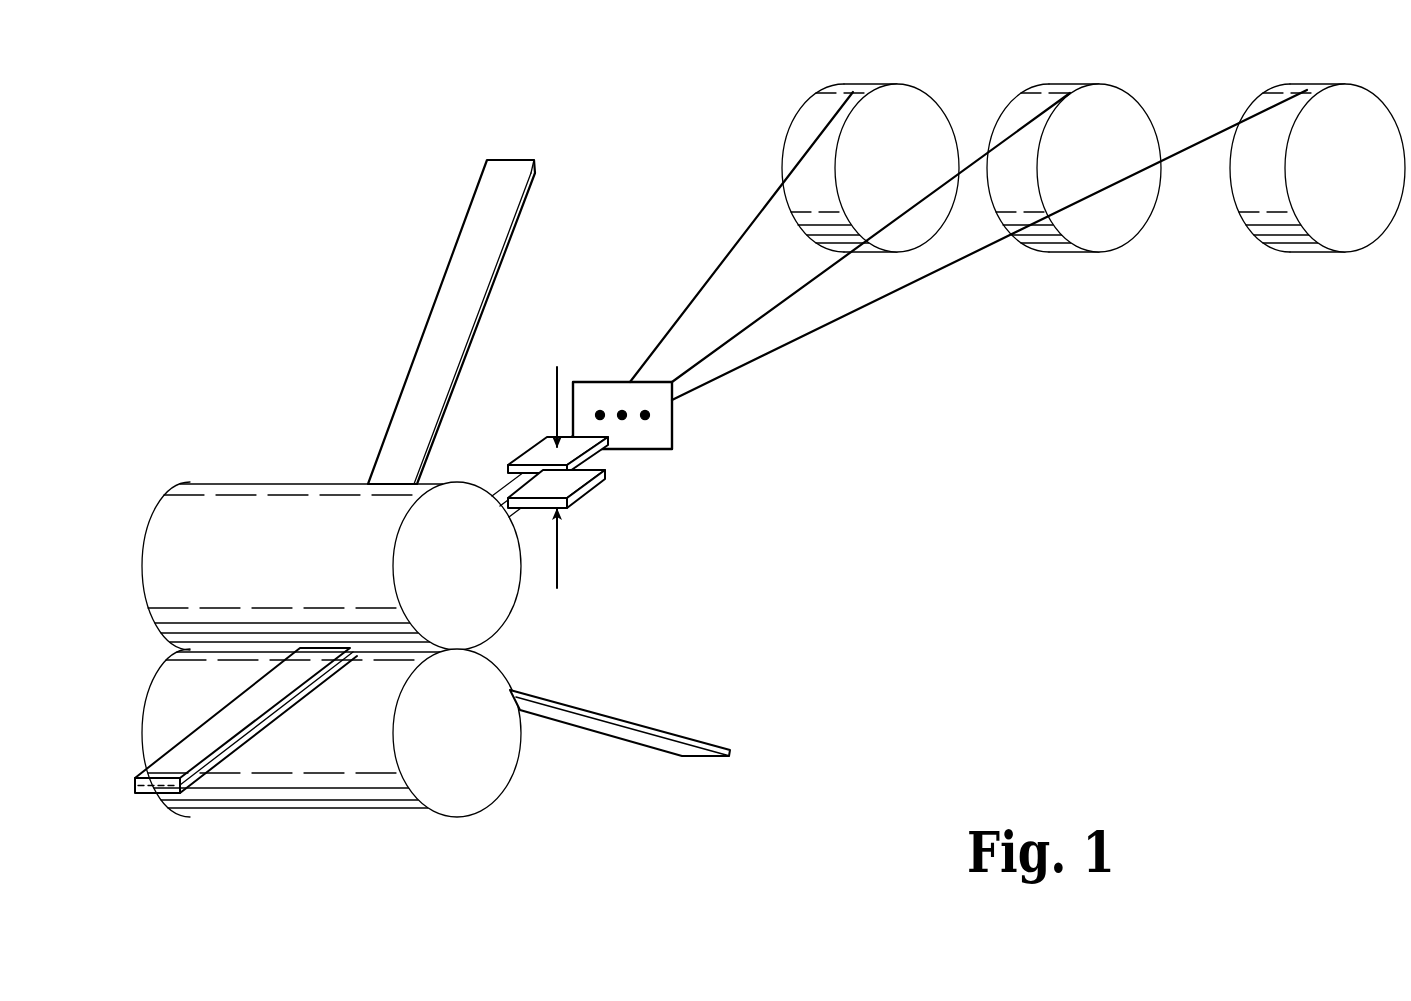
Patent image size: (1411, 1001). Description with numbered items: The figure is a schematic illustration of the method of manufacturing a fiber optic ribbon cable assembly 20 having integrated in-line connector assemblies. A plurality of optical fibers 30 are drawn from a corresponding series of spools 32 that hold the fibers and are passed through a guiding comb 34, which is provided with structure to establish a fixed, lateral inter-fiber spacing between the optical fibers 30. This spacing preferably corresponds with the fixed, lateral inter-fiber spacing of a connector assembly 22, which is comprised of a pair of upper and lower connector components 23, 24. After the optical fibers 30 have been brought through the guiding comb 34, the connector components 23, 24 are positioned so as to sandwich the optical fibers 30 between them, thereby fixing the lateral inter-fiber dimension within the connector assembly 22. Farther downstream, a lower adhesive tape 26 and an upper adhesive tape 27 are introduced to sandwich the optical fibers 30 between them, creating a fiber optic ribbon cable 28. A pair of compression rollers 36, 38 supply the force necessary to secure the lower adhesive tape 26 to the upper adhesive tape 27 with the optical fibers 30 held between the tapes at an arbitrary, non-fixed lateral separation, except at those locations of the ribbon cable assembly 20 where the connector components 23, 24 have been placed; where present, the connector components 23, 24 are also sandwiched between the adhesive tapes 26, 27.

The fiber optic ribbon cable assembly 20 is at (600, 78).
The connector assembly 22 is at (591, 477).
The connector component 23 is at (582, 493).
The connector component 24 is at (528, 458).
The lower adhesive tape 26 is at (482, 218).
The upper adhesive tape 27 is at (612, 728).
The fiber optic ribbon cable 28 is at (182, 753).
The optical fibers 30 is at (702, 295).
The spools 32 is at (1155, 122).
The guiding comb 34 is at (672, 435).
The compression roller 36 is at (487, 802).
The compression roller 38 is at (157, 512).